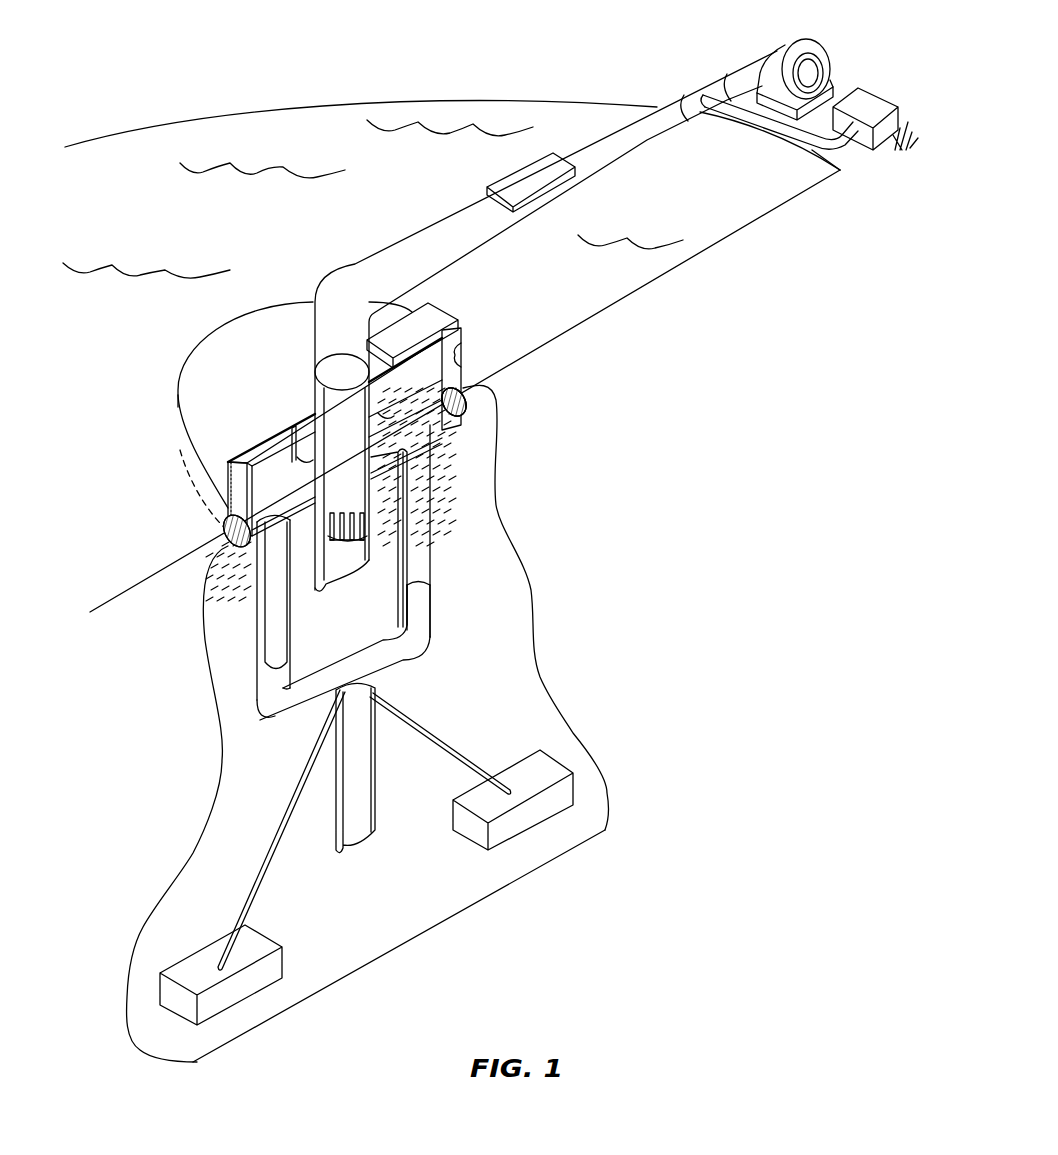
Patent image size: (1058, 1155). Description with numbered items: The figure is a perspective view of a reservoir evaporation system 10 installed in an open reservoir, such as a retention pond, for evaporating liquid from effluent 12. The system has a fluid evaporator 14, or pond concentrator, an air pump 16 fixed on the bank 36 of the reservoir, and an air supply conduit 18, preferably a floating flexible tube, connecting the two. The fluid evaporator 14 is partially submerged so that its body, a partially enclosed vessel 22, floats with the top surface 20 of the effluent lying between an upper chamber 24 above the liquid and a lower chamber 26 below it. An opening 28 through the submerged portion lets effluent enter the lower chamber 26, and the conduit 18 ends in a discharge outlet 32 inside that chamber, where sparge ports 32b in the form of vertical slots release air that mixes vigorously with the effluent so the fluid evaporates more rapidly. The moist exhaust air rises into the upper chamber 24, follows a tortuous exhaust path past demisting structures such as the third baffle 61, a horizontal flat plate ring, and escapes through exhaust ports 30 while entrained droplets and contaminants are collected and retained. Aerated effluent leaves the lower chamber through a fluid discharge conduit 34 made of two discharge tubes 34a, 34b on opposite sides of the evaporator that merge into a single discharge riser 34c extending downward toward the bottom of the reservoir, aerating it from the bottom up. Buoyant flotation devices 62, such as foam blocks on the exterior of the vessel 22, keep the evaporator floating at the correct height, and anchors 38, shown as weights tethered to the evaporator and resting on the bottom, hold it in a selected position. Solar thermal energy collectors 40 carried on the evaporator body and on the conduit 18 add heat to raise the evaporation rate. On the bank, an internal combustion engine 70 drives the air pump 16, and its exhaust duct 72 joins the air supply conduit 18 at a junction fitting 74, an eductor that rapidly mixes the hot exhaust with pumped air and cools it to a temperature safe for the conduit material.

The reservoir evaporation system 10 is at (383, 90).
The effluent 12 is at (289, 254).
The fluid evaporator 14 is at (193, 348).
The air pump 16 is at (780, 47).
The air supply conduit 18 is at (403, 253).
The top surface of the effluent 20 is at (606, 317).
The vessel 22 is at (201, 455).
The upper chamber 24 is at (262, 472).
The lower chamber 26 is at (300, 545).
The opening 28 is at (305, 632).
The exhaust ports 30 is at (227, 530).
The discharge outlet 32 is at (367, 545).
The sparge ports 32b is at (367, 527).
The fluid discharge conduit 34 is at (422, 650).
The discharge tube 34a is at (281, 711).
The discharge tube 34b is at (423, 592).
The discharge riser 34c is at (373, 828).
The bank of the reservoir 36 is at (650, 92).
The anchors 38 is at (557, 802).
The solar thermal energy collector 40 is at (523, 177).
The third baffle 61 is at (304, 434).
The buoyant flotation devices 62 is at (465, 410).
The internal combustion engine 70 is at (867, 103).
The exhaust duct 72 is at (812, 150).
The junction fitting 74 is at (700, 83).